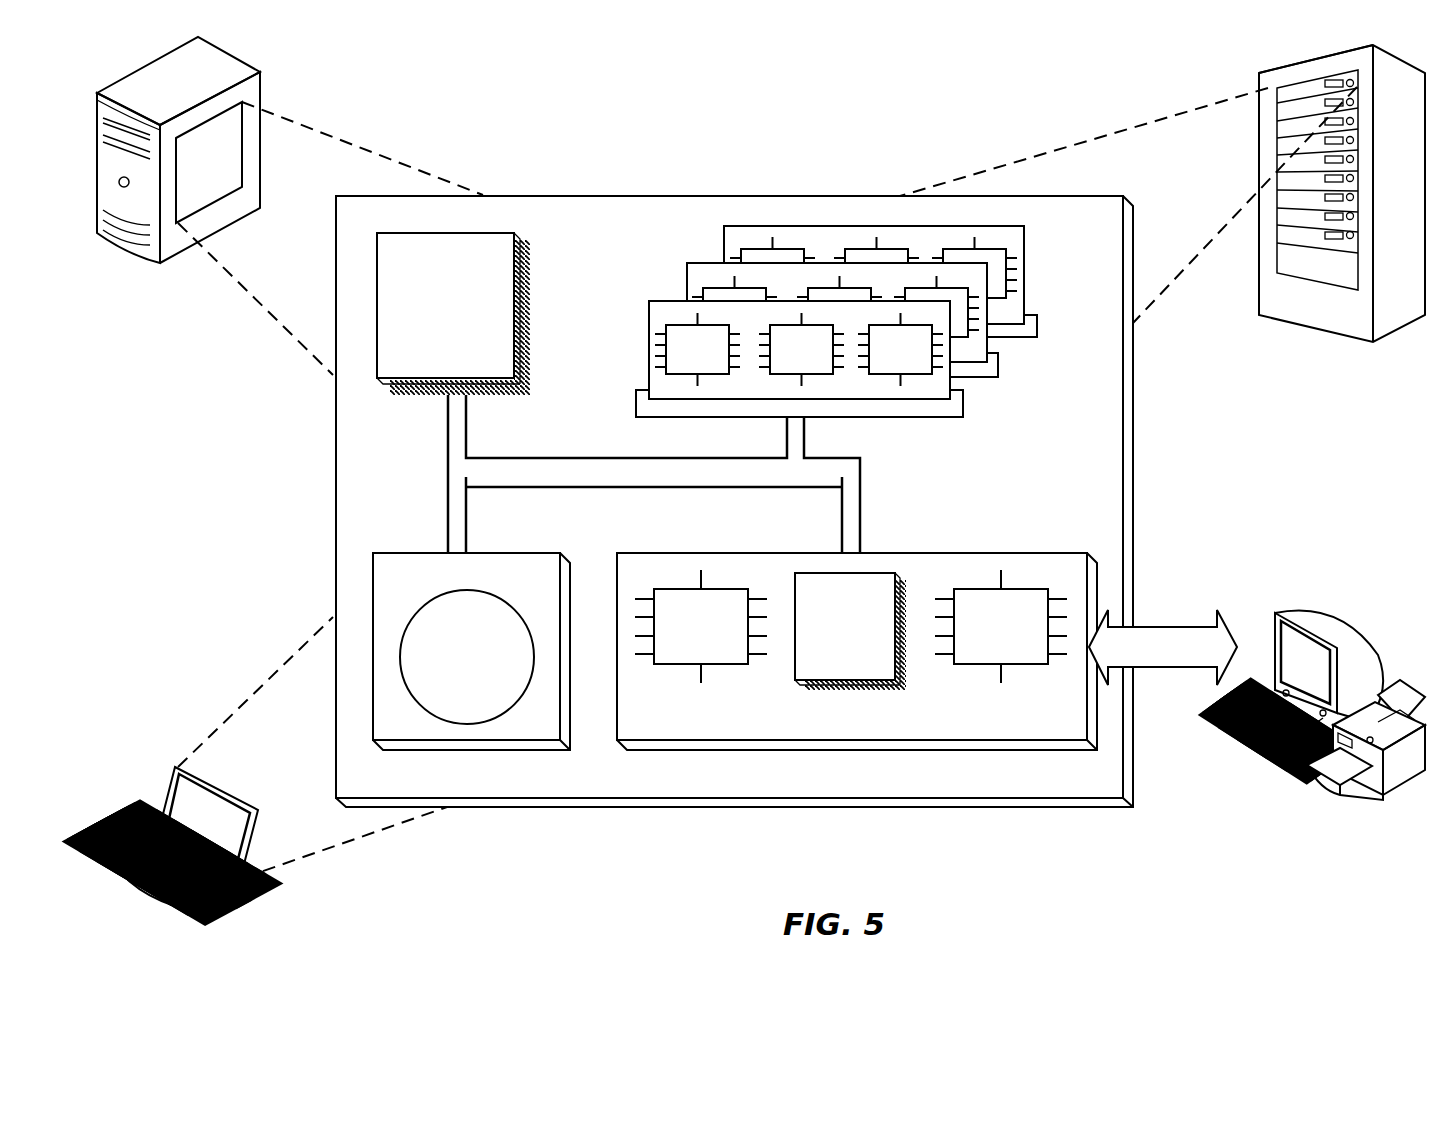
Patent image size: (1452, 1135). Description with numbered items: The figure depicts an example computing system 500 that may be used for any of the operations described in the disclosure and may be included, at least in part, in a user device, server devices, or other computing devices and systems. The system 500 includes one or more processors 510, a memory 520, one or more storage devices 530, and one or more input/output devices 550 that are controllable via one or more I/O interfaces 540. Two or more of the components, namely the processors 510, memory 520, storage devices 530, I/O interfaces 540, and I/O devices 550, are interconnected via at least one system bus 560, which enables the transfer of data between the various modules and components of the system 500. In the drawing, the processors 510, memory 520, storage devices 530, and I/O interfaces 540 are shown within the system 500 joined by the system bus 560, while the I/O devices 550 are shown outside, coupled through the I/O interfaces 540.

The system 500 is at (786, 425).
The processor 510 is at (502, 368).
The memory 520 is at (985, 391).
The storage device 530 is at (517, 732).
The I/O interface 540 is at (940, 731).
The input/output (I/O) device 550 is at (1306, 612).
The system bus 560 is at (645, 473).